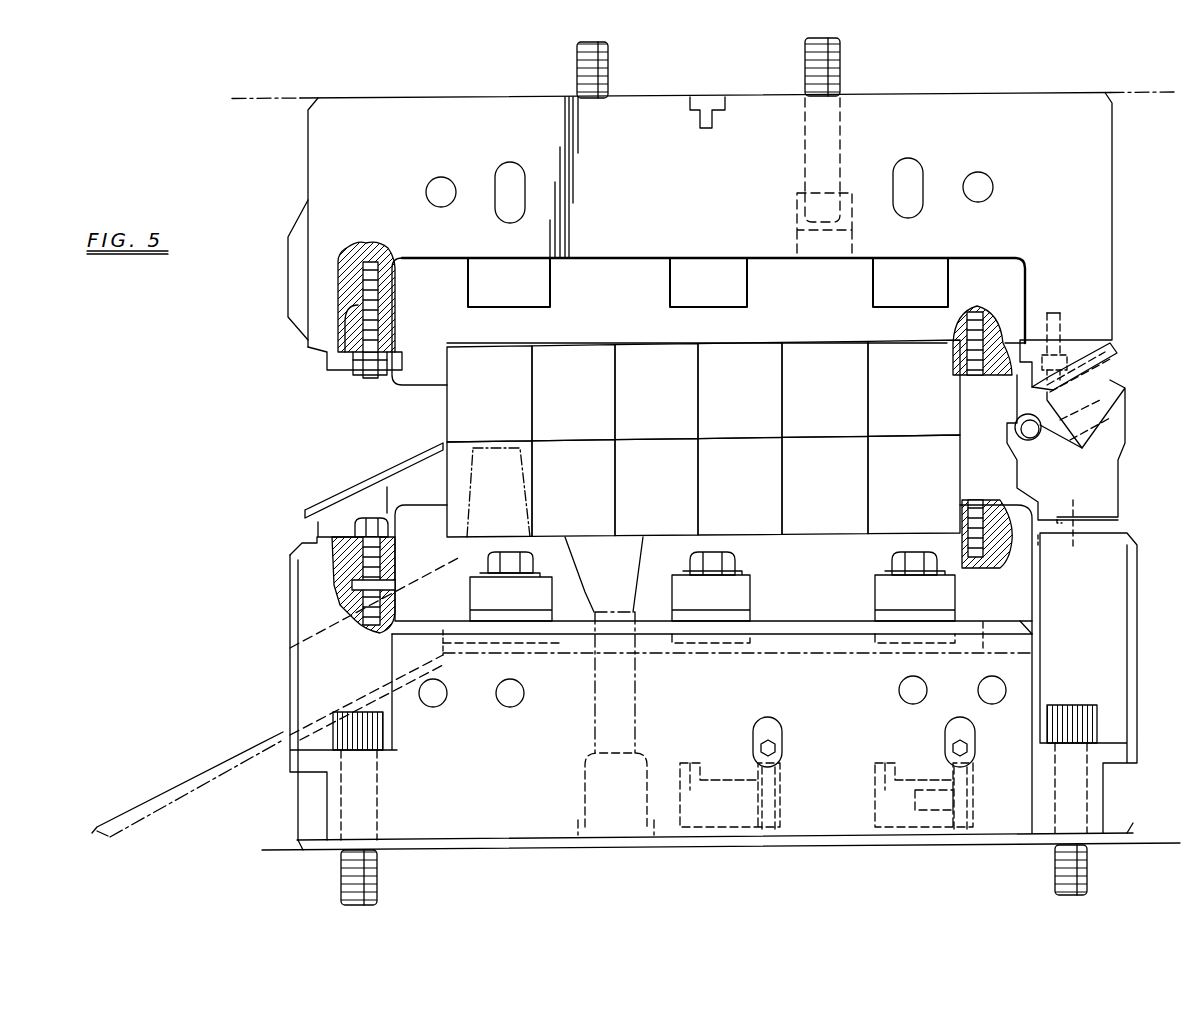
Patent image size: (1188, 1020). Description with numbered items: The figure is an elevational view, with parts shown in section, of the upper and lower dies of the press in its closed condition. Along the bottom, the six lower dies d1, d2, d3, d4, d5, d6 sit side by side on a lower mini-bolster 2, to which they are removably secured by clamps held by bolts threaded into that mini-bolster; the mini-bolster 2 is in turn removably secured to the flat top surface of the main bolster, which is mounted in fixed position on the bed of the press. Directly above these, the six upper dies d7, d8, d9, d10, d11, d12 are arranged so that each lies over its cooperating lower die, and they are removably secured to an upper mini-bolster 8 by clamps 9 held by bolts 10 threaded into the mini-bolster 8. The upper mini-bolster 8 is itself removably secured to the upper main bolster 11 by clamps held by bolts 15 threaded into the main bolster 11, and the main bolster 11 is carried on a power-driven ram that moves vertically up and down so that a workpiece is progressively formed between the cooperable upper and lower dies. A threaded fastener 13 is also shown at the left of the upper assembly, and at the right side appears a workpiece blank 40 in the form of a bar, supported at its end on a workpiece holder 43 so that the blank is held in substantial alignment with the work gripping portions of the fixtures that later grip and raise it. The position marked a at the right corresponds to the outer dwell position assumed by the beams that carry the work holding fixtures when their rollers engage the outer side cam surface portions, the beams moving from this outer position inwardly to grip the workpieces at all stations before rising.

The mini-bolster 2 is at (783, 583).
The mini-bolster 8 is at (618, 326).
The clamps 9 is at (990, 350).
The bolts 10 is at (973, 322).
The main bolster 11 is at (670, 209).
The clamping nut 13 is at (337, 333).
The bolts 15 is at (362, 378).
The workpiece blank 40 is at (1019, 418).
The workpiece holder 43 is at (1017, 457).
The outer dwell positions a is at (1060, 477).
The lower die d1 is at (925, 497).
The lower die d2 is at (830, 498).
The lower die d3 is at (753, 499).
The lower die d4 is at (675, 500).
The lower die d5 is at (583, 501).
The lower die d6 is at (512, 502).
The upper die d7 is at (926, 403).
The upper die d8 is at (835, 404).
The upper die d9 is at (750, 405).
The upper die d10 is at (683, 406).
The upper die d11 is at (592, 407).
The upper die d12 is at (511, 408).